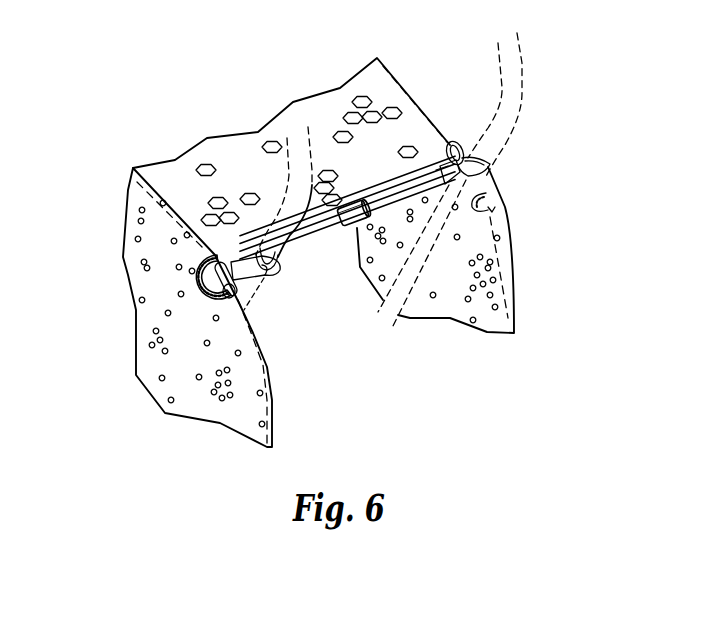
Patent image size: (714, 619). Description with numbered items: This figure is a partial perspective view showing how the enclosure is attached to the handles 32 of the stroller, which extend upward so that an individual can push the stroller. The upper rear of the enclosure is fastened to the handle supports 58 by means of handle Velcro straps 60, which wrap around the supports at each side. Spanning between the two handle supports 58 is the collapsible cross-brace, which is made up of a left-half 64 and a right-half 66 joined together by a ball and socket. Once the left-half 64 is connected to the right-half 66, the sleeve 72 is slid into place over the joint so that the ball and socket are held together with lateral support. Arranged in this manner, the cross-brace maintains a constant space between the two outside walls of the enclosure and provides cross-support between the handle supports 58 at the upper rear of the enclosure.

The handles 32 is at (288, 172).
The handle supports 58 is at (253, 298).
The handle Velcro straps 60 is at (490, 167).
The left-half 64 is at (307, 238).
The right-half 66 is at (423, 162).
The sleeve 72 is at (350, 204).